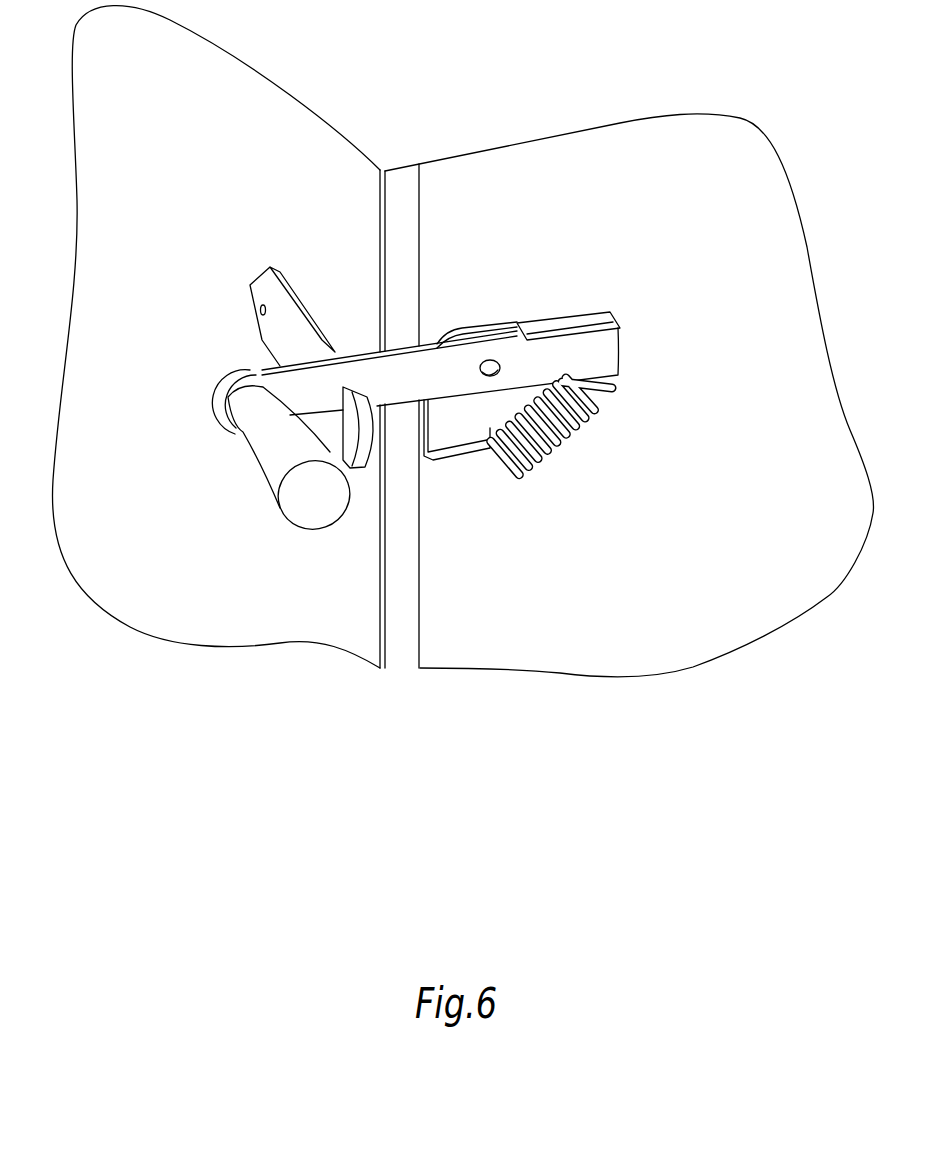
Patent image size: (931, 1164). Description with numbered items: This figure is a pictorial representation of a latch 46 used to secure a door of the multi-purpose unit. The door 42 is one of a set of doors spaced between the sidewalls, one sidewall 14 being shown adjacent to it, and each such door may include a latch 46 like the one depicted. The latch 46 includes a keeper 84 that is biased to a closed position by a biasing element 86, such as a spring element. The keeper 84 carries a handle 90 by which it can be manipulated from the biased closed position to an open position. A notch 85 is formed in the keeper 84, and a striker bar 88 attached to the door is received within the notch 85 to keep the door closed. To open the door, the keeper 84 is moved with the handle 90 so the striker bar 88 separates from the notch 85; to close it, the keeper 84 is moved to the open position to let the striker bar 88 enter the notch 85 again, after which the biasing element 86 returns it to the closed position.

The sidewall 14 is at (778, 312).
The door 42 is at (133, 172).
The latch 46 is at (590, 286).
The keeper 84 is at (600, 348).
The notch 85 is at (363, 385).
The biasing element 86 is at (567, 433).
The striker bar 88 is at (270, 330).
The handle 90 is at (268, 488).